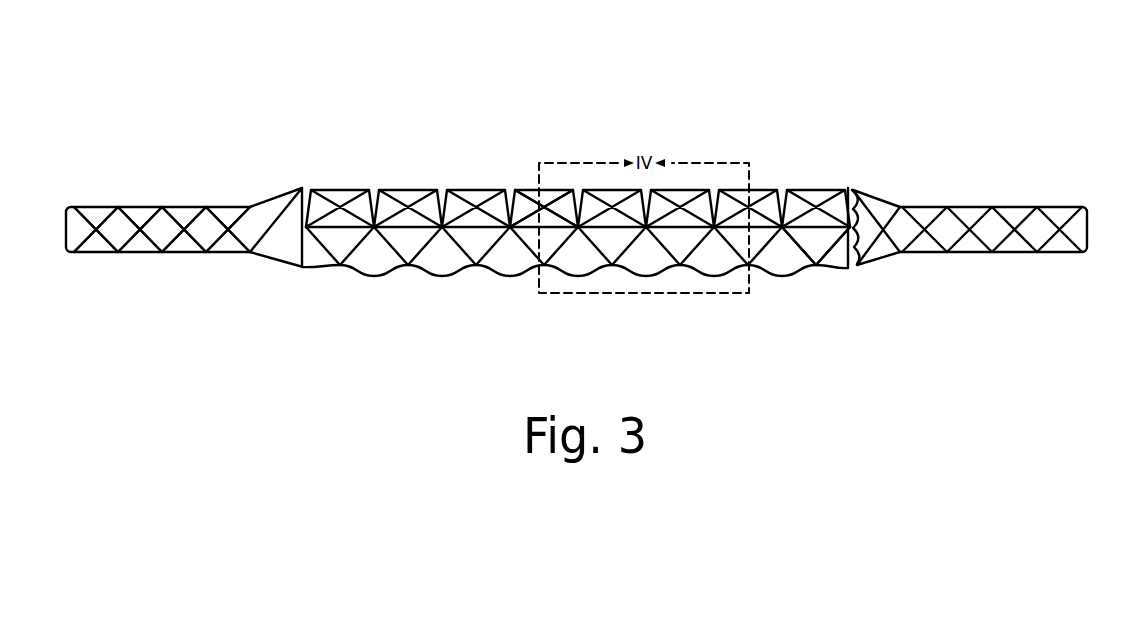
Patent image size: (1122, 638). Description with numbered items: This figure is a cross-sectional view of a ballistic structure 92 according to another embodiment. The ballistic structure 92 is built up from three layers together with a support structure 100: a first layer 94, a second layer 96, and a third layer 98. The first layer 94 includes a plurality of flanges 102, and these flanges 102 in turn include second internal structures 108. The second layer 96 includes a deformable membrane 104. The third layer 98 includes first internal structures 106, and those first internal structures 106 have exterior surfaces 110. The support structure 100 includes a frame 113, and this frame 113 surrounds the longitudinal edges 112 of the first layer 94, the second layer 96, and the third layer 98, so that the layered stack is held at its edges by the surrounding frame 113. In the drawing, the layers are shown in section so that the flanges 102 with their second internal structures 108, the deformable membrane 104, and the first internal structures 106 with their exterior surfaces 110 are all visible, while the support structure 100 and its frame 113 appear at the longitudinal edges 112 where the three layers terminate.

The ballistic structure 92 is at (550, 193).
The first layer 94 is at (857, 205).
The second layer 96 is at (735, 232).
The third layer 98 is at (852, 243).
The support structure 100 is at (223, 205).
The flanges 102 is at (480, 190).
The deformable membrane 104 is at (820, 229).
The first internal structures 106 is at (524, 246).
The second internal structures 108 is at (523, 197).
The exterior surfaces 110 is at (438, 278).
The longitudinal edges 112 is at (313, 192).
The frame 113 is at (115, 208).